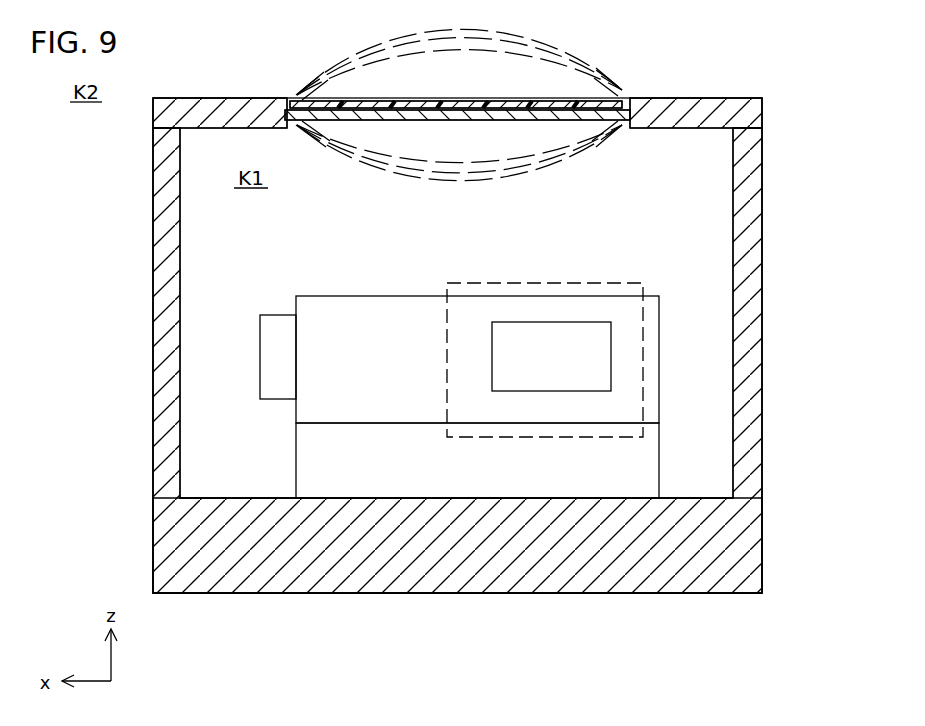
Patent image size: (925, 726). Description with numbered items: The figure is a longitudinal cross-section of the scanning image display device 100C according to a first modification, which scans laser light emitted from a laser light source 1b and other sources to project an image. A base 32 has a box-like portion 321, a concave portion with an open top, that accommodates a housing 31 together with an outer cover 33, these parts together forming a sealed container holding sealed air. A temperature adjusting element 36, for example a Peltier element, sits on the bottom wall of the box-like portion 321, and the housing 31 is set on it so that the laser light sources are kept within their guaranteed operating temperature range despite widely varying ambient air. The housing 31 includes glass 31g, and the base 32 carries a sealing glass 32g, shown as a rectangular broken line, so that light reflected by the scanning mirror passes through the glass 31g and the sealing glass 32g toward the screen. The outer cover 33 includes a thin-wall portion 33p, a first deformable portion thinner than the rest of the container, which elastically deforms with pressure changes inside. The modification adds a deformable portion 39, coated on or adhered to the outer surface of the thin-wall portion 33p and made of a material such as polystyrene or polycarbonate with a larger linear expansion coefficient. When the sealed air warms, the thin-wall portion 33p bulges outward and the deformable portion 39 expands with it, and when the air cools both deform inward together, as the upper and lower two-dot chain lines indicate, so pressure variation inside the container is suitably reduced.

The scanning image display device 100C is at (777, 79).
The base 32 is at (445, 596).
The box-like portion 321 is at (620, 568).
The outer cover 33 is at (667, 117).
The thin-wall portion 33p is at (553, 122).
The deformable portion 39 is at (543, 100).
The housing 31 is at (370, 296).
The glass 31g is at (492, 352).
The sealing glass 32g is at (648, 393).
The temperature adjusting element 36 is at (397, 460).
The laser light source 1b is at (273, 362).